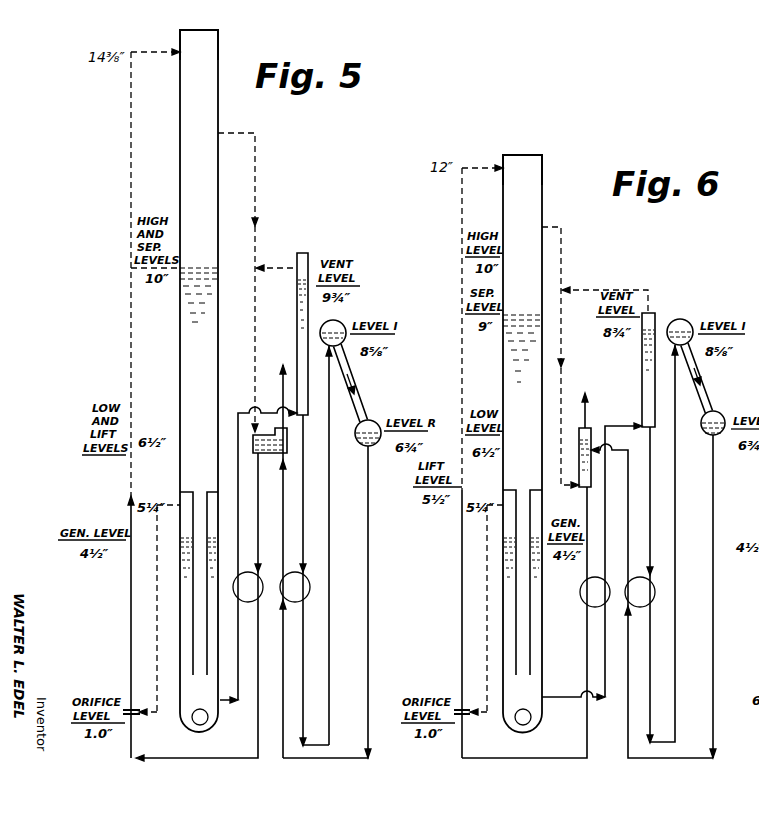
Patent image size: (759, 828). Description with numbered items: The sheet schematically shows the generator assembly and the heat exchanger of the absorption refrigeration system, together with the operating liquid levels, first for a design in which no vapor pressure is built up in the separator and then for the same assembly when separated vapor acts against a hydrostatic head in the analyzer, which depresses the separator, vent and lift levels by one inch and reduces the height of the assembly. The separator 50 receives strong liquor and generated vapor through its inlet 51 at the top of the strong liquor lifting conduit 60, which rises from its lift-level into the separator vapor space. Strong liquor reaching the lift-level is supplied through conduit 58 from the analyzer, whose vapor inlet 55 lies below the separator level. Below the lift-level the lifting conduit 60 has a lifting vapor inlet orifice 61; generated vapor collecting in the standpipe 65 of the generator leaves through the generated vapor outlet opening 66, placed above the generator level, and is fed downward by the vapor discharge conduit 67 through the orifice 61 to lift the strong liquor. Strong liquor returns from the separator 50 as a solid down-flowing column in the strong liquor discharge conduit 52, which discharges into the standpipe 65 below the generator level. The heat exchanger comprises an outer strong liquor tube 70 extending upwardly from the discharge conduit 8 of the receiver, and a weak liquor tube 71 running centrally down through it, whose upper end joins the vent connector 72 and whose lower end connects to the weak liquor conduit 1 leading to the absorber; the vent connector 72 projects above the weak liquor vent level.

In FIG. 5, the weak liquor conduit 1 is at (330, 572).
In FIG. 5, the discharge conduit 8 is at (372, 605).
In FIG. 5, the separator 50 is at (203, 166).
In FIG. 6, the separator 50 is at (527, 241).
In FIG. 5, the separator inlet 51 is at (183, 52).
In FIG. 6, the separator inlet 51 is at (506, 174).
In FIG. 5, the strong liquor discharge conduit 52 is at (207, 676).
In FIG. 6, the strong liquor discharge conduit 52 is at (530, 676).
In FIG. 6, the vapor inlet 55 is at (578, 486).
In FIG. 5, the conduit 58 is at (205, 758).
In FIG. 6, the conduit 58 is at (540, 758).
In FIG. 5, the strong liquor lifting conduit 60 is at (131, 600).
In FIG. 6, the strong liquor lifting conduit 60 is at (462, 582).
In FIG. 5, the lifting vapor inlet orifice 61 is at (139, 716).
In FIG. 6, the lifting vapor inlet orifice 61 is at (470, 716).
In FIG. 5, the standpipe 65 is at (181, 572).
In FIG. 6, the standpipe 65 is at (545, 607).
In FIG. 5, the generated vapor outlet opening 66 is at (177, 508).
In FIG. 6, the generated vapor outlet opening 66 is at (500, 508).
In FIG. 5, the vapor discharge conduit 67 is at (156, 652).
In FIG. 5, the strong liquor tube 70 is at (282, 738).
In FIG. 5, the weak liquor tube 71 is at (304, 652).
In FIG. 5, the vent connector 72 is at (297, 311).
In FIG. 6, the vent connector 72 is at (642, 376).